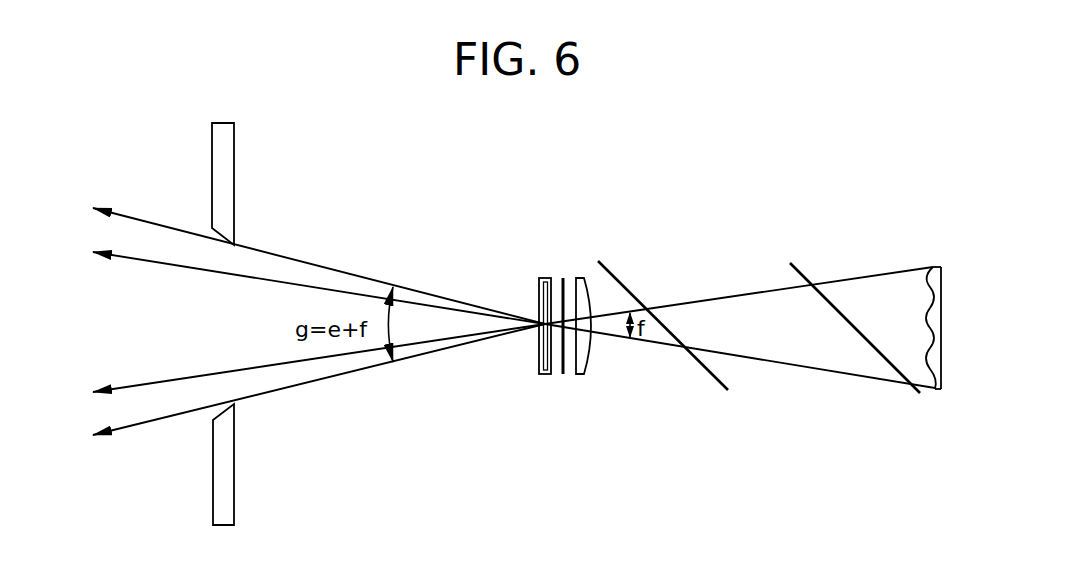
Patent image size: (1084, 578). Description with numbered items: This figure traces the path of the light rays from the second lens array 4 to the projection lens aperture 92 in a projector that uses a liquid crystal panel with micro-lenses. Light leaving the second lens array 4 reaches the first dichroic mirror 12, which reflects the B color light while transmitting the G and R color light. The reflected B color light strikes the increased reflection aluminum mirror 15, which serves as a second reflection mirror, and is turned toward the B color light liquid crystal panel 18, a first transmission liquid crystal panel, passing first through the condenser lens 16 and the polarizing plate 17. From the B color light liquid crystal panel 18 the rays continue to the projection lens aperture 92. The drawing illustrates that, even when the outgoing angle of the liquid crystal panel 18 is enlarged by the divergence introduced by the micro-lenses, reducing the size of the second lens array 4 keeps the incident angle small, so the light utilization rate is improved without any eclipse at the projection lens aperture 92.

The projection lens aperture 92 is at (234, 175).
The B color light liquid crystal panel 18 is at (540, 277).
The polarizing plate 17 is at (563, 277).
The condenser lens 16 is at (583, 277).
The increased reflection aluminum mirror 15 is at (620, 278).
The first dichroic mirror 12 is at (800, 265).
The second lens array 4 is at (937, 267).